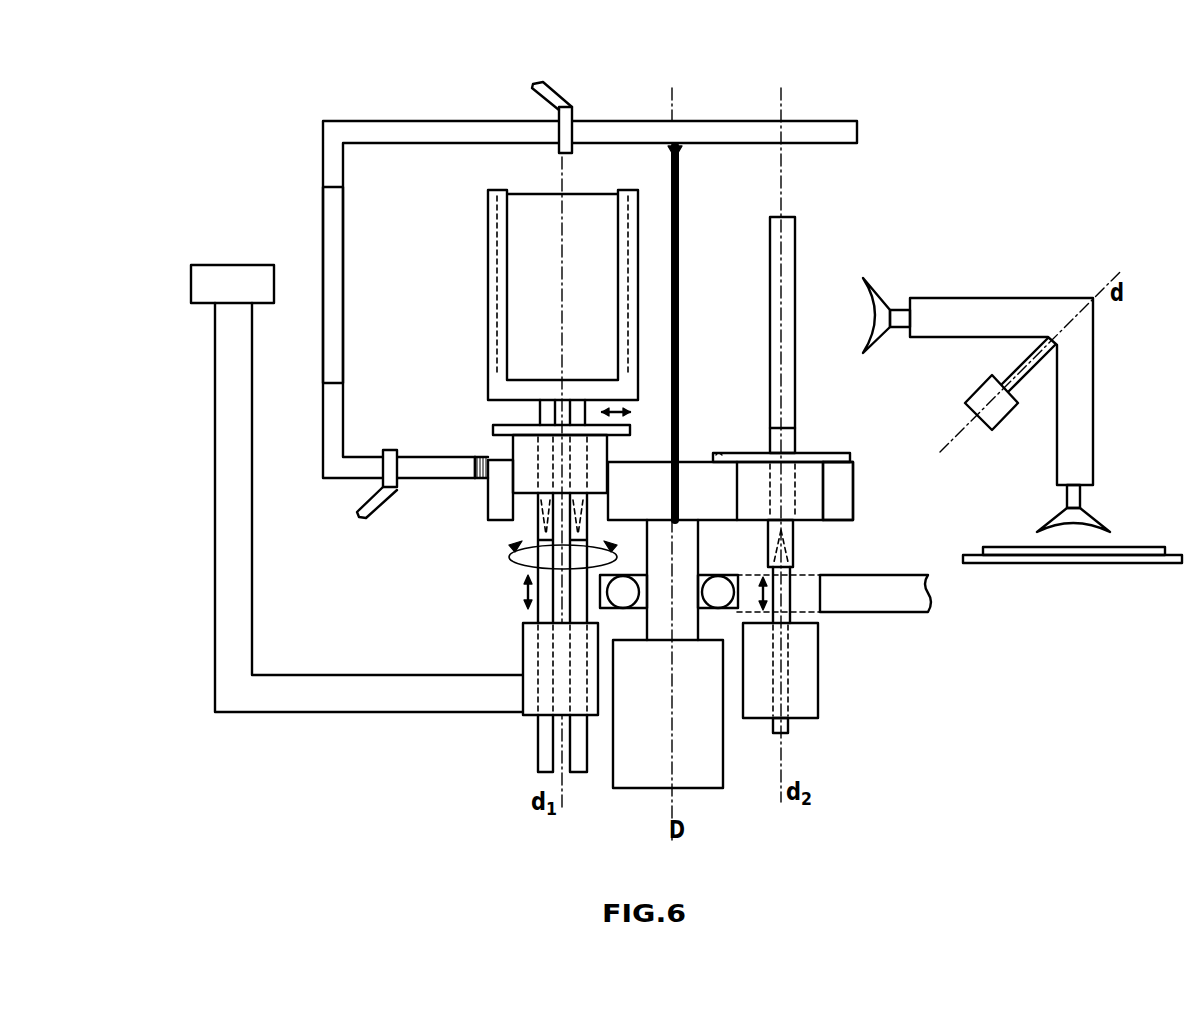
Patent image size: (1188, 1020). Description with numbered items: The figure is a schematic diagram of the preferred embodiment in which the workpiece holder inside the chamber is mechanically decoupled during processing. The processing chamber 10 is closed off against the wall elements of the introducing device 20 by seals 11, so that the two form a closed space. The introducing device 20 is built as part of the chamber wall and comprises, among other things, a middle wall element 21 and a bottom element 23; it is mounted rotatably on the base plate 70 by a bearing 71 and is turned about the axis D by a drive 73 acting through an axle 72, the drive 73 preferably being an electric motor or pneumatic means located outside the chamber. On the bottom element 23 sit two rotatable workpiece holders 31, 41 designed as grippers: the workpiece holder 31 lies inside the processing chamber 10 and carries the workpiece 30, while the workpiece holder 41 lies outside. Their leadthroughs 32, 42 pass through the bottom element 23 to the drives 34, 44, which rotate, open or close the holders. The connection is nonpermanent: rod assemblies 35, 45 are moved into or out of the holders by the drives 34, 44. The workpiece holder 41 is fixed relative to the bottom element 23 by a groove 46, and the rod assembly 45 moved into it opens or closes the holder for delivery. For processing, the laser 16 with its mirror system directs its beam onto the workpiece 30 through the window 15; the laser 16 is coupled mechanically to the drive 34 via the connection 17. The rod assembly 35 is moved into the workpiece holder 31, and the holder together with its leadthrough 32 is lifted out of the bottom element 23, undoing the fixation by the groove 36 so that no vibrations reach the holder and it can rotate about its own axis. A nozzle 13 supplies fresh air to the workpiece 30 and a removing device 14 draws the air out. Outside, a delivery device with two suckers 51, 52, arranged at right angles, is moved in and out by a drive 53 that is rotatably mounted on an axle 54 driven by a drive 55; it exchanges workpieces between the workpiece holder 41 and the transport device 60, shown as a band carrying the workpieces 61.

The processing chamber 10 is at (330, 152).
The seals 11 is at (670, 145).
The nozzle 13 is at (562, 105).
The removing device 14 is at (380, 505).
The window 15 is at (332, 222).
The laser 16 is at (226, 283).
The connection 17 is at (256, 528).
The introducing device 20 is at (897, 491).
The middle wall element 21 is at (681, 160).
The bottom element 23 is at (843, 498).
The workpiece 30 is at (538, 222).
The workpiece holder 31 is at (538, 500).
The leadthrough 32 is at (527, 448).
The drive 34 is at (560, 682).
The rod assembly 35 is at (542, 747).
The groove 36 is at (618, 457).
The workpiece holder 41 is at (790, 528).
The leadthrough 42 is at (807, 490).
The drive 44 is at (805, 672).
The rod assembly 45 is at (790, 725).
The groove 46 is at (718, 455).
The suction device 51 is at (877, 302).
The suction device 52 is at (1080, 518).
The drive 53 is at (998, 312).
The axle 54 is at (1013, 367).
The drive 55 is at (988, 403).
The transport device 60 is at (1068, 563).
The workpieces 61 is at (1137, 552).
The base plate 70 is at (903, 603).
The bearing 71 is at (720, 587).
The axle 72 is at (678, 558).
The drive 73 is at (695, 753).